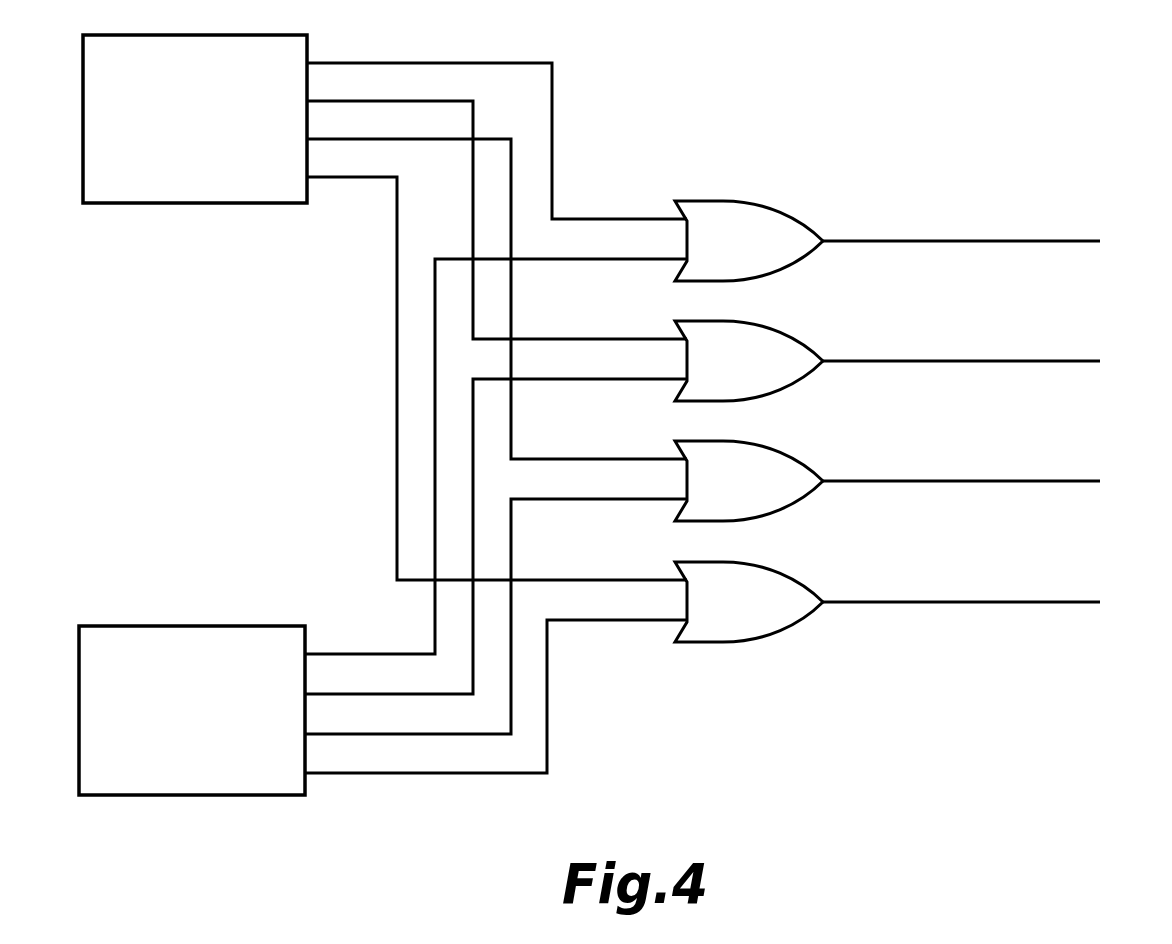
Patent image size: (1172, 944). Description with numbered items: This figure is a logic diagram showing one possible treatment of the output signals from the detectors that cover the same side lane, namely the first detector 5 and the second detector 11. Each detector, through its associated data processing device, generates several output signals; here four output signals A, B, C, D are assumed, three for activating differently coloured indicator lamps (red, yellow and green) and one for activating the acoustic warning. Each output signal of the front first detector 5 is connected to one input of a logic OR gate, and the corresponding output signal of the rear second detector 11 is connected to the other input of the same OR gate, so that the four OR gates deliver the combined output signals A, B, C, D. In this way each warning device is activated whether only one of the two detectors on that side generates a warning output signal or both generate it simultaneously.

The first detector 5 is at (195, 119).
The second detector 11 is at (192, 710).
The output signal A is at (917, 241).
The output signal B is at (917, 361).
The output signal C is at (918, 481).
The output signal D is at (919, 602).